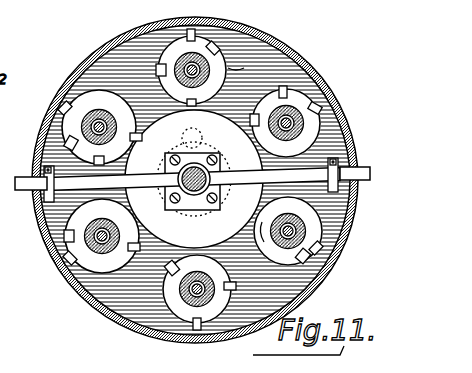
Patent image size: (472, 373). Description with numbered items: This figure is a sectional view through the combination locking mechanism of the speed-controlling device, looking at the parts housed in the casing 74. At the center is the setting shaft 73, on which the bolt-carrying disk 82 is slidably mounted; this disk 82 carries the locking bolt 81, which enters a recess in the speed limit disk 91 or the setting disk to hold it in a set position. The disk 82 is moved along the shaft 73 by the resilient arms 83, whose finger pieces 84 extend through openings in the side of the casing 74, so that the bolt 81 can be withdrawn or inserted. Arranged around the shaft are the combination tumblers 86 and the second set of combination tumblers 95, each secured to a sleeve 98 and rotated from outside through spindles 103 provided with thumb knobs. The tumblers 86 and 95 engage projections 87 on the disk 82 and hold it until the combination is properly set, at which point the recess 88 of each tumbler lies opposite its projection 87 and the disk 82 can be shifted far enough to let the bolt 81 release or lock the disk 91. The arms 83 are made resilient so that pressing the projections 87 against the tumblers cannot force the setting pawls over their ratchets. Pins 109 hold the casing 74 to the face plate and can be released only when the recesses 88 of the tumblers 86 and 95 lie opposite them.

The setting shaft 73 is at (160, 166).
The casing 74 is at (313, 77).
The locking bolt 81 is at (182, 137).
The disk 82 is at (203, 212).
The resilient arms 83 is at (45, 225).
The finger pieces 84 is at (22, 176).
The combination tumblers 86 is at (165, 78).
The projections 87 is at (258, 238).
The recess 88 is at (283, 92).
The speed limit disk 91 is at (178, 204).
The combination tumblers 95 is at (171, 305).
The sleeves 98 is at (243, 77).
The spindles 103 is at (100, 122).
The pins 109 is at (67, 259).